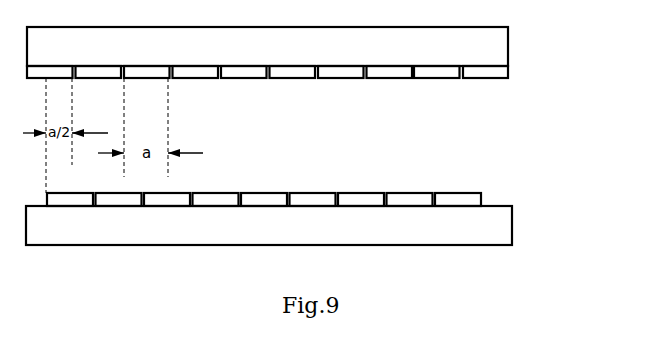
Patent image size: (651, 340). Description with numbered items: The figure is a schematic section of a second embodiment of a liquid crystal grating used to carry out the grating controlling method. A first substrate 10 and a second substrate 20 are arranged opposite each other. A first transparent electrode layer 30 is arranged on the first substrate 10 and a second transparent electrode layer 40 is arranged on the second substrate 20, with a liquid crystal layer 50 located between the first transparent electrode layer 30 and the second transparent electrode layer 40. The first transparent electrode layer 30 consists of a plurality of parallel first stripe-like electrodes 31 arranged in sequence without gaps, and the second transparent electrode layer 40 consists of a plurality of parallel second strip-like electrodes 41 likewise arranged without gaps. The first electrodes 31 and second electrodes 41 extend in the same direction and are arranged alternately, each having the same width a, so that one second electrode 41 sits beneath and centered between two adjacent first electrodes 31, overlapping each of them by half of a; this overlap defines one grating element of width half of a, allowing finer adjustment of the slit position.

The first substrate 10 is at (497, 44).
The second substrate 20 is at (497, 228).
The first transparent electrode layer 30 is at (309, 87).
The first stripe-like electrode 31 is at (442, 78).
The second transparent electrode layer 40 is at (311, 182).
The second strip-like electrode 41 is at (362, 197).
The liquid crystal layer 50 is at (455, 144).